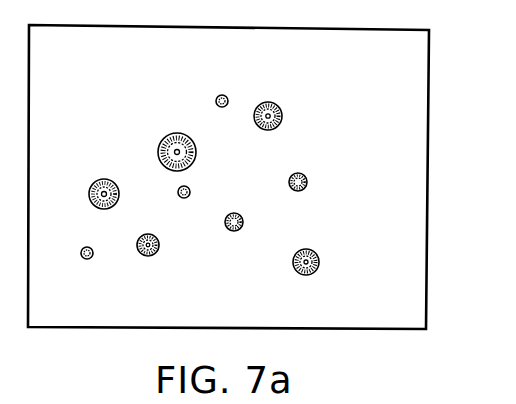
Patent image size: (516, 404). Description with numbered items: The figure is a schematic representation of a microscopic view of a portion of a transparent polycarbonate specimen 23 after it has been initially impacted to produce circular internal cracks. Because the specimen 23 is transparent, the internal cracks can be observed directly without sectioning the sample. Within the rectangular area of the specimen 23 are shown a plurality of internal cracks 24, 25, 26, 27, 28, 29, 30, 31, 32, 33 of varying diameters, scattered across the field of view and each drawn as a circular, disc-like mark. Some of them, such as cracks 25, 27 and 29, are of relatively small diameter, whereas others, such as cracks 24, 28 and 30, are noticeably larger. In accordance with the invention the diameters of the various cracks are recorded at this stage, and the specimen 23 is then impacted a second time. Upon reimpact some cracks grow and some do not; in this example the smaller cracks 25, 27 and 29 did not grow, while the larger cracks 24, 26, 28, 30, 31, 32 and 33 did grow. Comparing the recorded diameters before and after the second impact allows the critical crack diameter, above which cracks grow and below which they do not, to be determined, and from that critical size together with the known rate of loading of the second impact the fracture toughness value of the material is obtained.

The specimen 23 is at (420, 171).
The internal crack 24 is at (92, 186).
The internal crack 25 is at (82, 258).
The internal crack 26 is at (150, 256).
The internal crack 27 is at (181, 198).
The internal crack 28 is at (196, 154).
The internal crack 29 is at (228, 97).
The internal crack 30 is at (282, 112).
The internal crack 31 is at (244, 222).
The internal crack 32 is at (306, 177).
The internal crack 33 is at (319, 263).